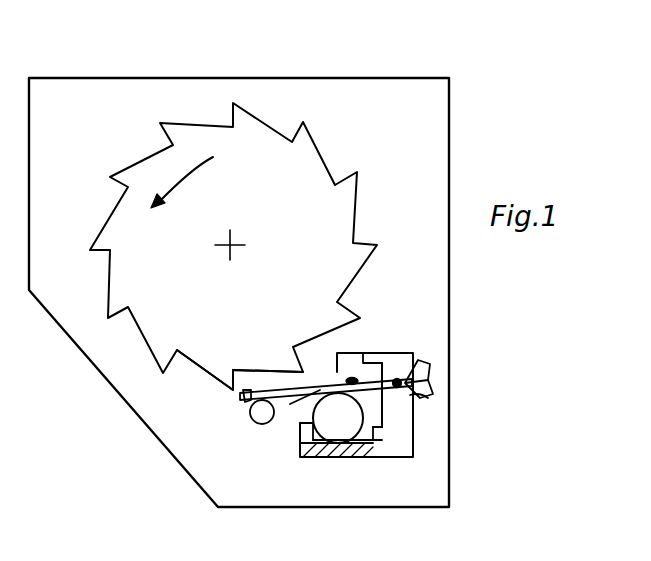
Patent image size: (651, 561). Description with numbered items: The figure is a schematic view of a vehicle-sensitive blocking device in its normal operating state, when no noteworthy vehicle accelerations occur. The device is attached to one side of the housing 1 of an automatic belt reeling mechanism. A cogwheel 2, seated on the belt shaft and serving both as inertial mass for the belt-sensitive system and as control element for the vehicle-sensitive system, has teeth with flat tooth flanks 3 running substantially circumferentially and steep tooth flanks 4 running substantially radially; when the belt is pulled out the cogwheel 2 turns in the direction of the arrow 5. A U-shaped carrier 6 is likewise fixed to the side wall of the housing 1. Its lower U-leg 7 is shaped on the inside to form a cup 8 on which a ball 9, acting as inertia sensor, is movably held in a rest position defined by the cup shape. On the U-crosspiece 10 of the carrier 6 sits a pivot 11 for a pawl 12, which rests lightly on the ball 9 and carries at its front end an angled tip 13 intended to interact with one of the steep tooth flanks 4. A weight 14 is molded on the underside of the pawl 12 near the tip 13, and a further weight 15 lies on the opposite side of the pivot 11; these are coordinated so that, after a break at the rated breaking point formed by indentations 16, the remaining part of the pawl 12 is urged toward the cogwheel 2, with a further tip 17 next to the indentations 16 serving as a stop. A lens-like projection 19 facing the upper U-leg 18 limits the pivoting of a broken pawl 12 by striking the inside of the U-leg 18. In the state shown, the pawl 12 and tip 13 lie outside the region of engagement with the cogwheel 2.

The housing 1 is at (347, 97).
The cogwheel 2 is at (312, 229).
The flat tooth flanks 3 is at (259, 368).
The steep tooth flanks 4 is at (230, 382).
The arrow 5 is at (183, 172).
The U-shaped carrier 6 is at (400, 440).
The lower U-leg 7 is at (364, 457).
The cup 8 is at (317, 459).
The ball 9 is at (312, 400).
The U-crosspiece 10 is at (412, 403).
The pivot 11 is at (418, 396).
The pawl 12 is at (340, 358).
The angled tip 13 is at (243, 394).
The weight 14 is at (292, 402).
The further weight 15 is at (432, 385).
The indentations 16 is at (254, 425).
The further tip 17 is at (348, 381).
The upper U-leg 18 is at (412, 380).
The lens-like projection 19 is at (411, 412).